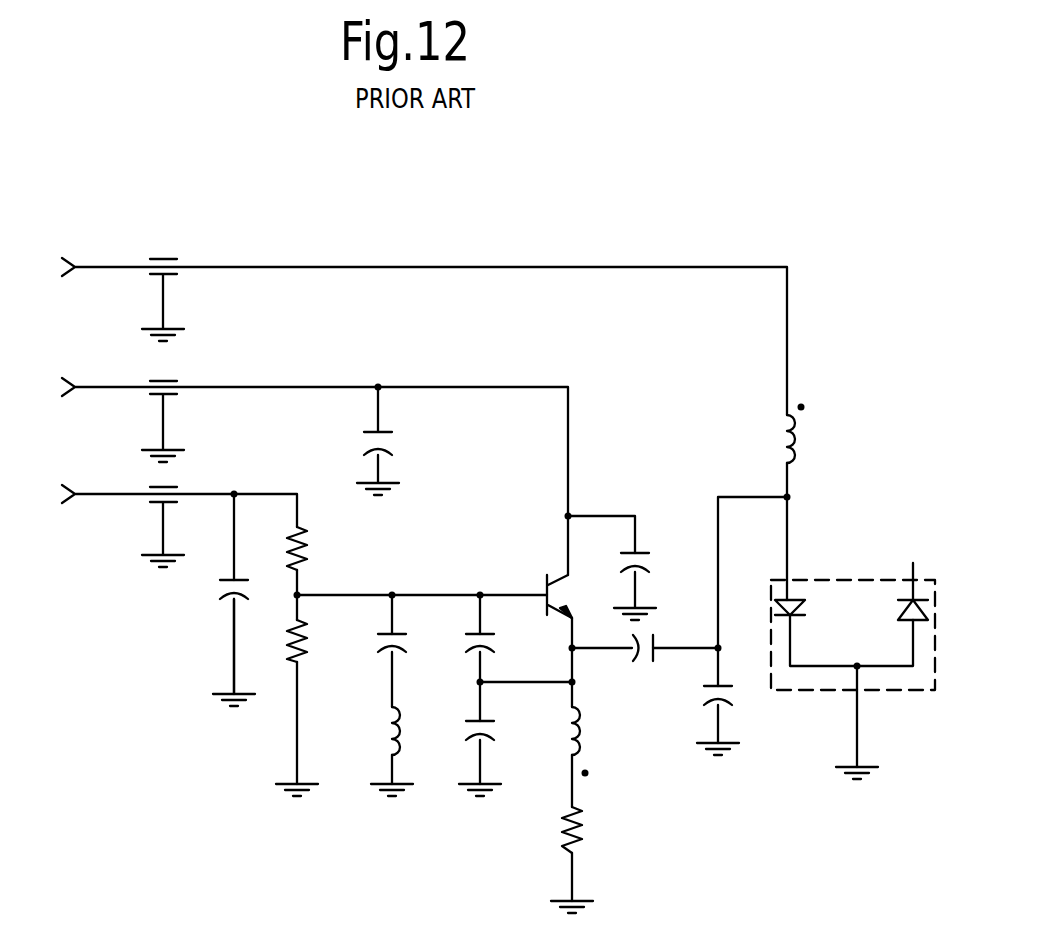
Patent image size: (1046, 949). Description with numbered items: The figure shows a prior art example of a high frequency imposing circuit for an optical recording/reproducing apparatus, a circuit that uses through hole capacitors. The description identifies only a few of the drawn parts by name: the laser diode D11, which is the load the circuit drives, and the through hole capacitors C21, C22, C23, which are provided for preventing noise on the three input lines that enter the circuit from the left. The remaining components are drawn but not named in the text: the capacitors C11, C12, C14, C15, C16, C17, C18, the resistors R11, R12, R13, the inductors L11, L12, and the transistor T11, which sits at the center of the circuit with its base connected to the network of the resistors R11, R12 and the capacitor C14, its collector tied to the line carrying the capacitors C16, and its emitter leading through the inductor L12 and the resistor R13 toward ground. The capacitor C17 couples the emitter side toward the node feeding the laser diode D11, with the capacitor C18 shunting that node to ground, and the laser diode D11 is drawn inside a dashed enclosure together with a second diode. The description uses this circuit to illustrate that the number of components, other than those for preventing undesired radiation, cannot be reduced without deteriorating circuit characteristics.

The through hole capacitor C21 is at (152, 273).
The through hole capacitor C22 is at (152, 388).
The through hole capacitor C23 is at (150, 497).
The bypass capacitor C11 is at (370, 442).
The bypass capacitor C12 is at (222, 595).
The capacitor C14 is at (471, 646).
The capacitor C15 is at (472, 733).
The bypass capacitor C16 is at (652, 571).
The coupling capacitor C17 is at (648, 664).
The capacitor C18 is at (705, 698).
The bias resistor R11 is at (302, 535).
The bias resistor R12 is at (305, 642).
The emitter resistor R13 is at (565, 832).
The inductor L11 is at (390, 738).
The inductor L12 is at (572, 740).
The transistor T11 is at (547, 575).
The laser diode D11 is at (850, 578).